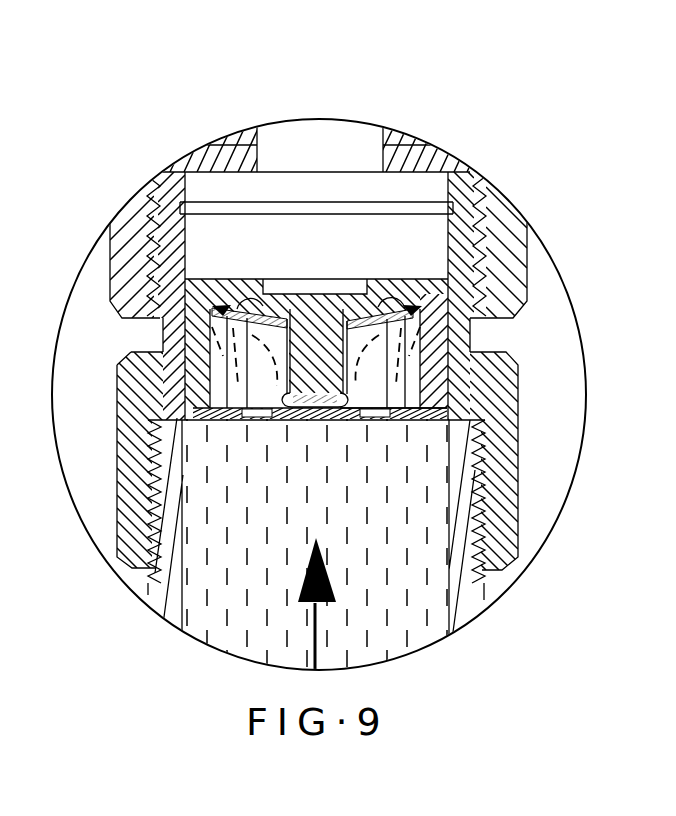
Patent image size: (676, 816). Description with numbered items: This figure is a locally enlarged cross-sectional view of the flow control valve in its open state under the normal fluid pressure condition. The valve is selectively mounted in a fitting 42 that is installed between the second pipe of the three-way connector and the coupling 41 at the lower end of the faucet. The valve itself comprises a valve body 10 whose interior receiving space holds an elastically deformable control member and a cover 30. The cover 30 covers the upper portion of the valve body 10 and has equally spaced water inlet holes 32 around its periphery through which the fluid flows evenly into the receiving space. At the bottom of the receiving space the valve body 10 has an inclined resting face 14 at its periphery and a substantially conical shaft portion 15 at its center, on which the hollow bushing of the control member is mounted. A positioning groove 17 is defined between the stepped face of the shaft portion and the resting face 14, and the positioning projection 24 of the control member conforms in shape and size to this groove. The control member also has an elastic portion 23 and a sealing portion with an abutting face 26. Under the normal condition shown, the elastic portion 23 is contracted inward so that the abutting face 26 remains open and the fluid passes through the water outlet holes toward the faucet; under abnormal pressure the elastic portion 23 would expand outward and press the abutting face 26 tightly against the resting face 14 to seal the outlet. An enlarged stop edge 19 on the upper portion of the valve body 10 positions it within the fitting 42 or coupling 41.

The valve body 10 is at (437, 350).
The resting face 14 is at (218, 308).
The shaft portion 15 is at (324, 320).
The positioning groove 17 is at (412, 307).
The stop edge 19 is at (177, 417).
The elastic portion 23 is at (278, 314).
The positioning projection 24 is at (377, 303).
The abutting face 26 is at (251, 296).
The cover 30 is at (217, 412).
The water inlet holes 32 is at (380, 420).
The coupling 41 is at (518, 221).
The fitting 42 is at (505, 408).